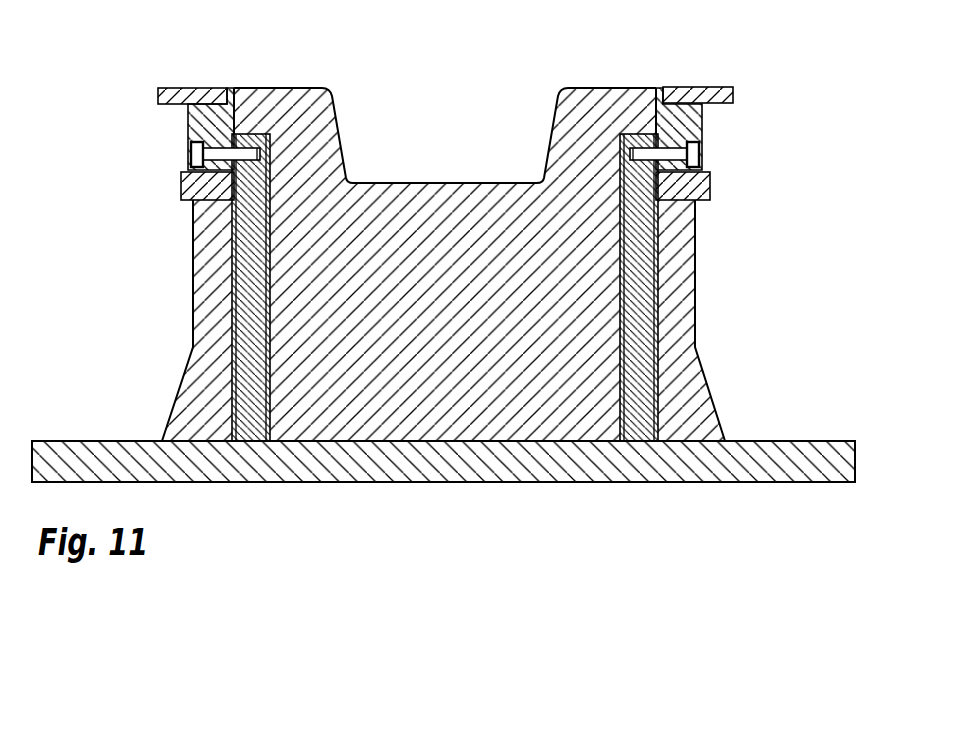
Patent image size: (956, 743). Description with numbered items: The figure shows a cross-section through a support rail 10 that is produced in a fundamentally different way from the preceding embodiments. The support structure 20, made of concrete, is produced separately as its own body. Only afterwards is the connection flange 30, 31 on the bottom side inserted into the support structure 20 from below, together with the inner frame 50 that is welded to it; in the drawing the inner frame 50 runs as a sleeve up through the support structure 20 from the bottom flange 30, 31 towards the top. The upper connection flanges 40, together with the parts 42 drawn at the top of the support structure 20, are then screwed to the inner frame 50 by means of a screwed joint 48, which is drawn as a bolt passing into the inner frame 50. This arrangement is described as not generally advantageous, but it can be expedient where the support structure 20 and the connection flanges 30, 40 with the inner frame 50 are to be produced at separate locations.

The support rail 10 is at (533, 116).
The support structure 20 is at (188, 275).
The connection flange 30 is at (434, 441).
The base plate surface 31 is at (165, 462).
The upper connection flange 40 is at (181, 180).
The flange 42 is at (213, 91).
The screwed joint 48 is at (230, 142).
The inner frame 50 is at (252, 258).